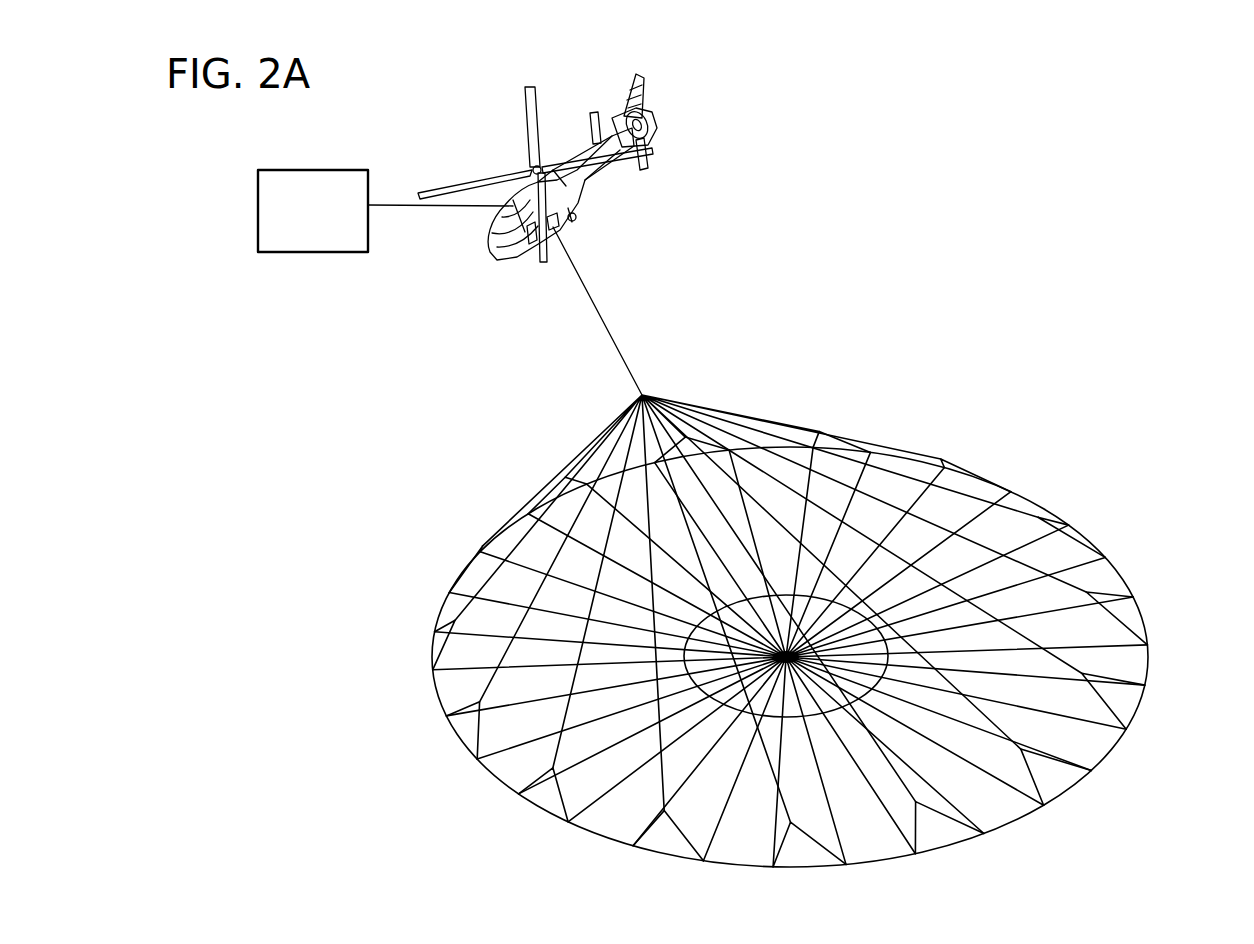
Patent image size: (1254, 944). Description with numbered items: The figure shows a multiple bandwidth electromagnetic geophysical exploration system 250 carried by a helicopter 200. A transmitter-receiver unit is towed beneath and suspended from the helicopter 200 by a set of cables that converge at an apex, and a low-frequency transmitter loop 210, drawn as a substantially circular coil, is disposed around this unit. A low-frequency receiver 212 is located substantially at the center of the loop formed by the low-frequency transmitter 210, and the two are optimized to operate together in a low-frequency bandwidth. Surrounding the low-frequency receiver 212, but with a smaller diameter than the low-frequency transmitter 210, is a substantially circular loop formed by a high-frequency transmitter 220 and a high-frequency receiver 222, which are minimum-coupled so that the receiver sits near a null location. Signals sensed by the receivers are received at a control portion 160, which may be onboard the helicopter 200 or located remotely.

The multiple bandwidth electromagnetic geophysical exploration system 250 is at (208, 170).
The control portion 160 is at (295, 242).
The helicopter 200 is at (578, 193).
The low-frequency transmitter loop 210 is at (411, 657).
The low-frequency receiver 212 is at (856, 641).
The high-frequency transmitter 220 is at (789, 762).
The high-frequency receiver 222 is at (791, 552).